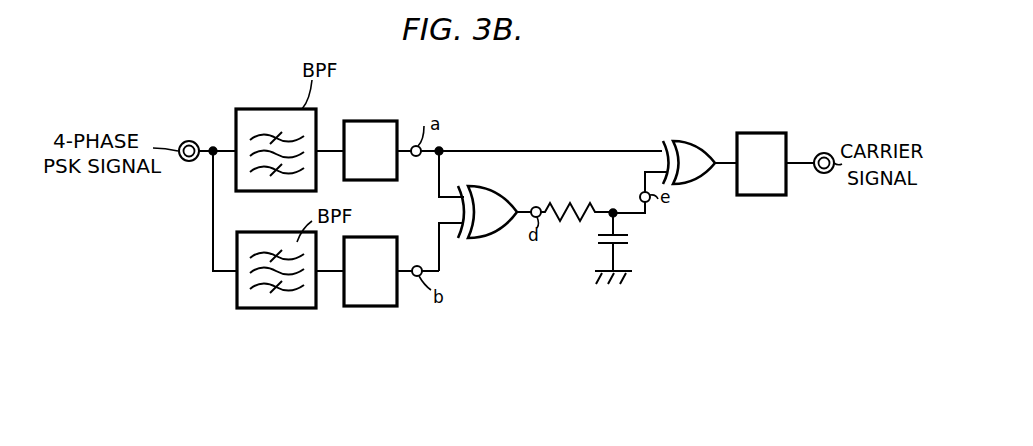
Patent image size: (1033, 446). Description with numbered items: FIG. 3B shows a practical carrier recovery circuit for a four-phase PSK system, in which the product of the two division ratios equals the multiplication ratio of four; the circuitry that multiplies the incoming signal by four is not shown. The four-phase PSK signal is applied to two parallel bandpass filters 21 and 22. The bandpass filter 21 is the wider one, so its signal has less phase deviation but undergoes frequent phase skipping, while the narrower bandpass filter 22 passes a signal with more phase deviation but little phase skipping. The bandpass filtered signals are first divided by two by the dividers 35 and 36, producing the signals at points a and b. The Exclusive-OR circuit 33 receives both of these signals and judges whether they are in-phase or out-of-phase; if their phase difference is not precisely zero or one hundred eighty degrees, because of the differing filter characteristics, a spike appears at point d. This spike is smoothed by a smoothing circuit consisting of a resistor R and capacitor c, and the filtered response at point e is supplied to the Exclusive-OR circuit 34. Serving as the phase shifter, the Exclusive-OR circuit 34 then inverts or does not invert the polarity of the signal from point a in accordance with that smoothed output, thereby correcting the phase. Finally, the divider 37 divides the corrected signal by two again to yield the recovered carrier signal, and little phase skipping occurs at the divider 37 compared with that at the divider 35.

The bandpass filter 21 is at (267, 109).
The bandpass filter 22 is at (290, 309).
The divider 35 is at (365, 121).
The divider 36 is at (370, 306).
The Exclusive-OR circuit 33 is at (507, 187).
The Exclusive-OR circuit 34 is at (685, 139).
The divider 37 is at (770, 133).
The resistor R is at (583, 200).
The capacitor c is at (622, 240).